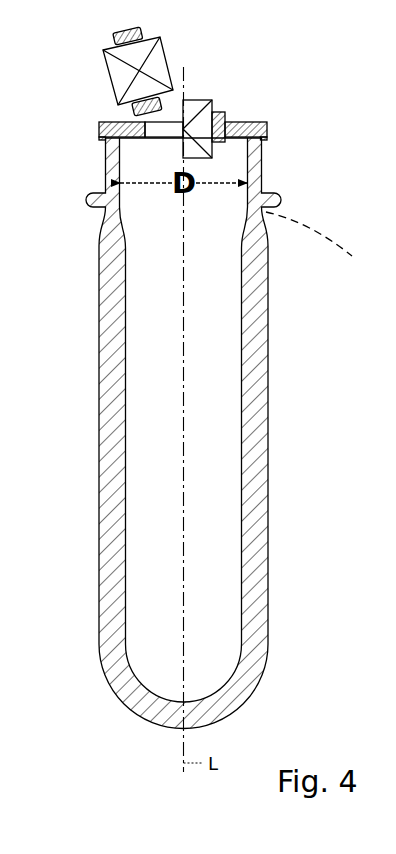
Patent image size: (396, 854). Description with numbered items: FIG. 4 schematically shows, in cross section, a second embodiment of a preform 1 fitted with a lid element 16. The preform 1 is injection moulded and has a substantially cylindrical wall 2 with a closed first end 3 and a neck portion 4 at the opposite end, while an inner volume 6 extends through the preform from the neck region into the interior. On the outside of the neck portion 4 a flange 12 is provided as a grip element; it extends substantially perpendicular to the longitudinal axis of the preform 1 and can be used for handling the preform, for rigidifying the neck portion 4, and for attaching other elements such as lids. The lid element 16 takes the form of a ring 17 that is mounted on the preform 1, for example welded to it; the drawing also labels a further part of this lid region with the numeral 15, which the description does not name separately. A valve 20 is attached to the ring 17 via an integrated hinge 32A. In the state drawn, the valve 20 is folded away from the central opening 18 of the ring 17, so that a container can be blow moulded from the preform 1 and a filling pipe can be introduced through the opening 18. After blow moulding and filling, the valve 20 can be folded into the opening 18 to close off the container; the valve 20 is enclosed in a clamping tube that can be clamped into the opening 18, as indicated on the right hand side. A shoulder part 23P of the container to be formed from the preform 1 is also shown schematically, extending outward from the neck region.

The preform 1 is at (160, 433).
The cylindrical wall 2 is at (160, 433).
The closed first end 3 is at (115, 681).
The neck portion 4 is at (160, 433).
The inner volume 6 is at (162, 414).
The flange 12 is at (160, 433).
The closure plate 15 is at (106, 121).
The lid element 16 is at (172, 115).
The ring 17 is at (238, 134).
The central opening 18 is at (167, 128).
The valve 20 is at (158, 67).
The integrated hinge 32A is at (145, 122).
The shoulder part 23P is at (323, 227).